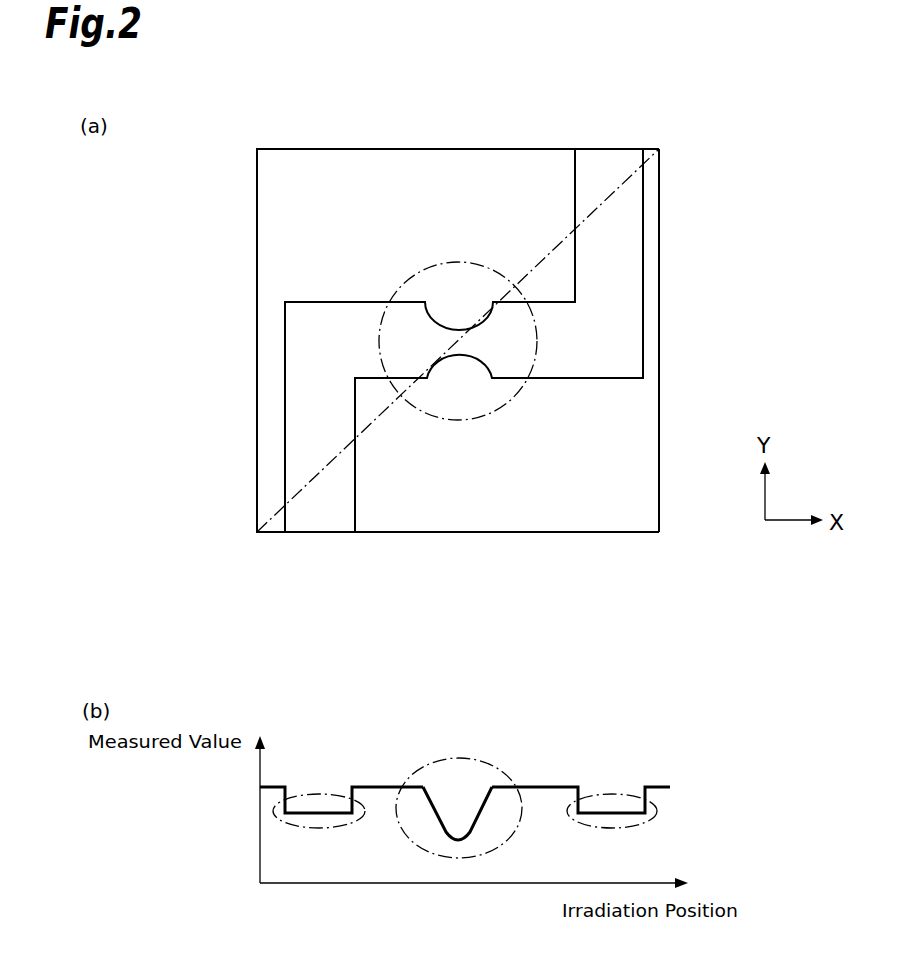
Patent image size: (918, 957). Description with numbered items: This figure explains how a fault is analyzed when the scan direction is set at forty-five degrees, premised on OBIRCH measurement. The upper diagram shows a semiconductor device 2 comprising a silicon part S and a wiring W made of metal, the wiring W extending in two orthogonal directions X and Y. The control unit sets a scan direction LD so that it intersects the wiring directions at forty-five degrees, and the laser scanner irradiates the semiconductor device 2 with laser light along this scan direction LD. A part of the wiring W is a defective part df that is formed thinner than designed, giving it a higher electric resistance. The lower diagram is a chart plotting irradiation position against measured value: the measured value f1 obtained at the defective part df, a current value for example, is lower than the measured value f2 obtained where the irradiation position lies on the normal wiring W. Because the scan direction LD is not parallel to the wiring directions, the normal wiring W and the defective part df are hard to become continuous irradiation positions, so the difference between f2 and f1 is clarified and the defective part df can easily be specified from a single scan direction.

The semiconductor device 2 is at (316, 144).
The silicon part S is at (647, 472).
The wiring W is at (601, 172).
The defective part df is at (455, 263).
The scan direction LD is at (589, 220).
The measured value in the defective part f1 is at (468, 757).
The measured value on the wiring f2 is at (320, 795).